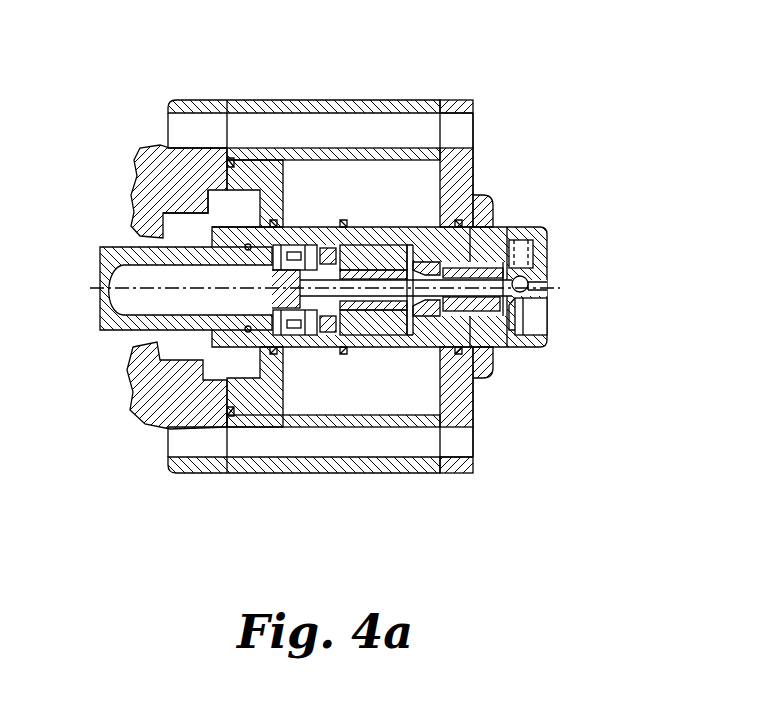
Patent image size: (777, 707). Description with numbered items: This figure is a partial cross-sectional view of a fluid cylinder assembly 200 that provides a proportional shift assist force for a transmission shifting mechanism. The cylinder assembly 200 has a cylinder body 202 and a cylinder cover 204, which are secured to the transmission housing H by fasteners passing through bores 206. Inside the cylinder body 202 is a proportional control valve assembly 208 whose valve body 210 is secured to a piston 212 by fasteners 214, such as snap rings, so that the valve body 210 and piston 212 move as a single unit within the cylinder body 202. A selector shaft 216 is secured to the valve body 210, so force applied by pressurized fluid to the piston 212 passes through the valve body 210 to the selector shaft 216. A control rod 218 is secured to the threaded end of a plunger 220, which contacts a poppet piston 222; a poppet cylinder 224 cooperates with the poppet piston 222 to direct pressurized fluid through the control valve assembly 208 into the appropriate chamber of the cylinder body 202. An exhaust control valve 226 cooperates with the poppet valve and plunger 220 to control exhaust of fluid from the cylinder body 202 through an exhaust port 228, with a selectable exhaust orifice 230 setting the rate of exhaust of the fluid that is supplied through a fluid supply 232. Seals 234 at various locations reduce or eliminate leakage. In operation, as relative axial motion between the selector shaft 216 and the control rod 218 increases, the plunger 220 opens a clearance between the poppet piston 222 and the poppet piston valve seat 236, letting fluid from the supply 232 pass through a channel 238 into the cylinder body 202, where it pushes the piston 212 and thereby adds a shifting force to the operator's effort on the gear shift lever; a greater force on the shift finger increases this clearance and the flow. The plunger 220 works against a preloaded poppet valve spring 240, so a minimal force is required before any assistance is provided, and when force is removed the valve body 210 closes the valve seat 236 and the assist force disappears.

The transmission housing H is at (265, 225).
The cylinder assembly 200 is at (423, 83).
The cylinder body 202 is at (438, 462).
The cylinder cover 204 is at (477, 406).
The bores 206 is at (487, 438).
The proportional control valve assembly 208 is at (504, 224).
The valve body 210 is at (408, 348).
The piston 212 is at (387, 182).
The fasteners 214 is at (283, 355).
The selector shaft 216 is at (123, 327).
The control rod 218 is at (143, 277).
The plunger 220 is at (205, 373).
The poppet piston 222 is at (353, 246).
The poppet cylinder 224 is at (352, 345).
The exhaust control valve 226 is at (493, 205).
The exhaust port 228 is at (556, 282).
The selectable exhaust orifice 230 is at (548, 290).
The fluid supply 232 is at (562, 329).
The seals 234 is at (230, 160).
The poppet piston valve seat 236 is at (322, 268).
The channel 238 is at (356, 262).
The poppet valve spring 240 is at (343, 336).